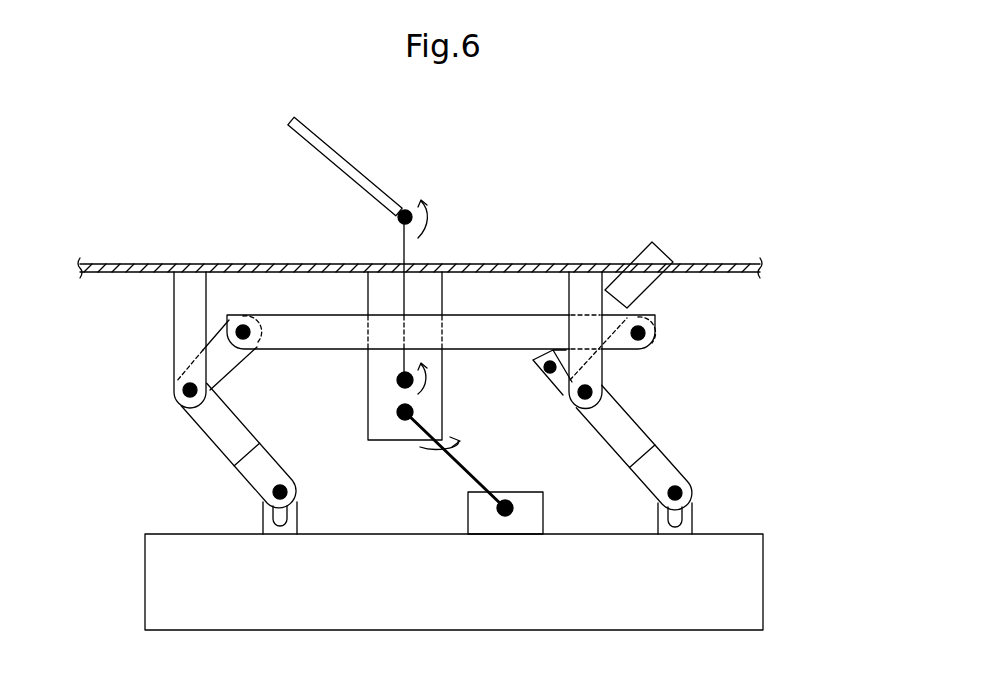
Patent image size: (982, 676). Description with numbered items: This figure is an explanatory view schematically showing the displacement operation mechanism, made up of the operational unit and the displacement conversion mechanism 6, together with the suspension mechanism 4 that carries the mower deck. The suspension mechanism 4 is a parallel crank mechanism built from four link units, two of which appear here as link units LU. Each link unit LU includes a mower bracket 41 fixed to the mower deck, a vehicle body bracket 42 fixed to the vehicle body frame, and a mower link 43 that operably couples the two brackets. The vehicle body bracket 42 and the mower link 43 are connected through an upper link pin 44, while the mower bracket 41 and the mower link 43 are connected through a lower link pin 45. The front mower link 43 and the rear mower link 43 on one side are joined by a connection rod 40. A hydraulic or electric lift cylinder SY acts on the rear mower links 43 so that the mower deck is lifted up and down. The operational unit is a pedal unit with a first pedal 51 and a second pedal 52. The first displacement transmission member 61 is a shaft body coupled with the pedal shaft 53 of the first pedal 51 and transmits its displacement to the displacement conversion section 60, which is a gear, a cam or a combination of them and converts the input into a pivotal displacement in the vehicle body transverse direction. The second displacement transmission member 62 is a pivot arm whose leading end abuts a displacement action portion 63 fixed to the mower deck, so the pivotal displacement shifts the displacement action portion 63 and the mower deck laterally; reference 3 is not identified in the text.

The base 3 is at (132, 578).
The suspension mechanism 4 is at (420, 426).
The displacement conversion mechanism 6 is at (326, 366).
The connection rod 40 is at (351, 304).
The mower bracket 41 is at (261, 520).
The vehicle body bracket 42 is at (180, 315).
The mower link 43 is at (205, 423).
The upper link pin 44 is at (198, 388).
The lower link pin 45 is at (283, 486).
The first pedal 51 is at (352, 157).
The second pedal 52 is at (382, 156).
The pedal shaft 53 is at (396, 222).
The displacement conversion section 60 is at (366, 385).
The first displacement transmission member 61 is at (406, 253).
The second displacement transmission member 62 is at (461, 468).
The displacement action portion 63 is at (467, 508).
The lift cylinder SY is at (644, 268).
The link unit LU is at (144, 406).